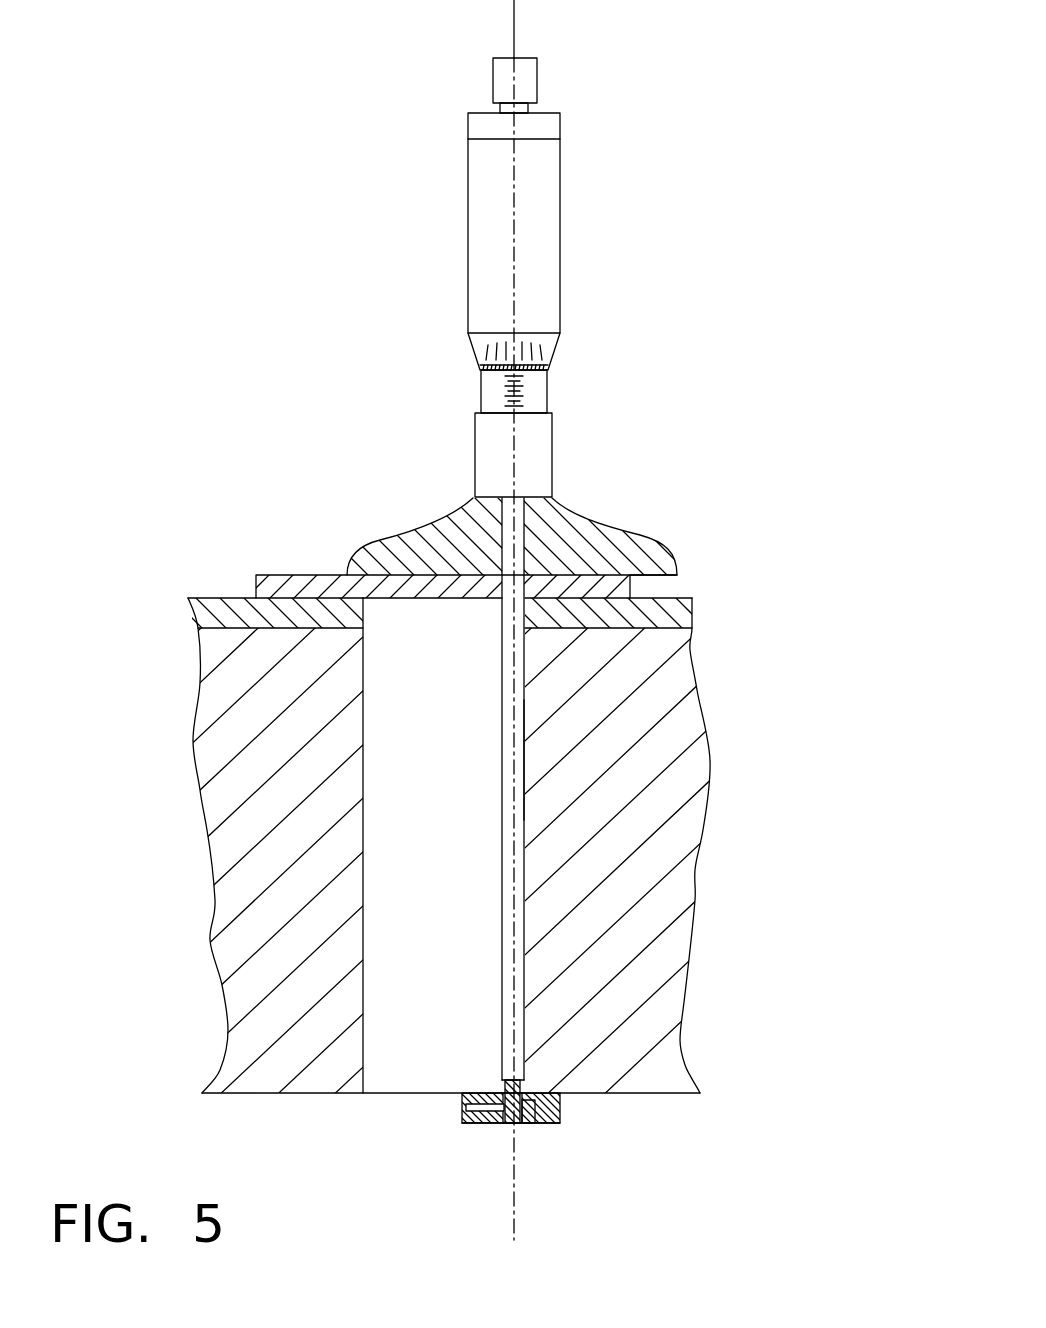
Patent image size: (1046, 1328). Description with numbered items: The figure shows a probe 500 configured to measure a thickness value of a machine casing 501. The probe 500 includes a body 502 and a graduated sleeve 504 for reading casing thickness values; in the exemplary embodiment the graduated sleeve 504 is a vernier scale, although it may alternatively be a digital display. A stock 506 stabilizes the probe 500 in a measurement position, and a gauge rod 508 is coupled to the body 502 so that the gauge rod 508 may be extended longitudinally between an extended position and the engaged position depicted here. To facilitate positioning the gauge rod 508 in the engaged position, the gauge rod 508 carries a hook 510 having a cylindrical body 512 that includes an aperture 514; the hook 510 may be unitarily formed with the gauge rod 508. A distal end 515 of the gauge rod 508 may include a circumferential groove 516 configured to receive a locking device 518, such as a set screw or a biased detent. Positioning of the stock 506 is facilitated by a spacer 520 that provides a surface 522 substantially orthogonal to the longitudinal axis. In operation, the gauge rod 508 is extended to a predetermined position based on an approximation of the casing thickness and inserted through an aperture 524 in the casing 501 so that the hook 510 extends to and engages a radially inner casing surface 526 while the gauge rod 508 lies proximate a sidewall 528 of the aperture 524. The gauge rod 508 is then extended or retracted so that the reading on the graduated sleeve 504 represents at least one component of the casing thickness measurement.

The probe 500 is at (740, 325).
The machine casing 501 is at (245, 834).
The body 502 is at (560, 165).
The graduated sleeve 504 is at (545, 343).
The stock 506 is at (640, 532).
The gauge rod 508 is at (502, 722).
The hook 510 is at (560, 1106).
The cylindrical body 512 is at (492, 1123).
The aperture 514 is at (500, 1082).
The distal end 515 is at (500, 1068).
The circumferential groove 516 is at (530, 1120).
The locking device 518 is at (465, 1107).
The spacer 520 is at (283, 575).
The surface 522 is at (514, 28).
The aperture 524 is at (447, 851).
The radially inner casing surface 526 is at (640, 1093).
The sidewall 528 is at (524, 767).